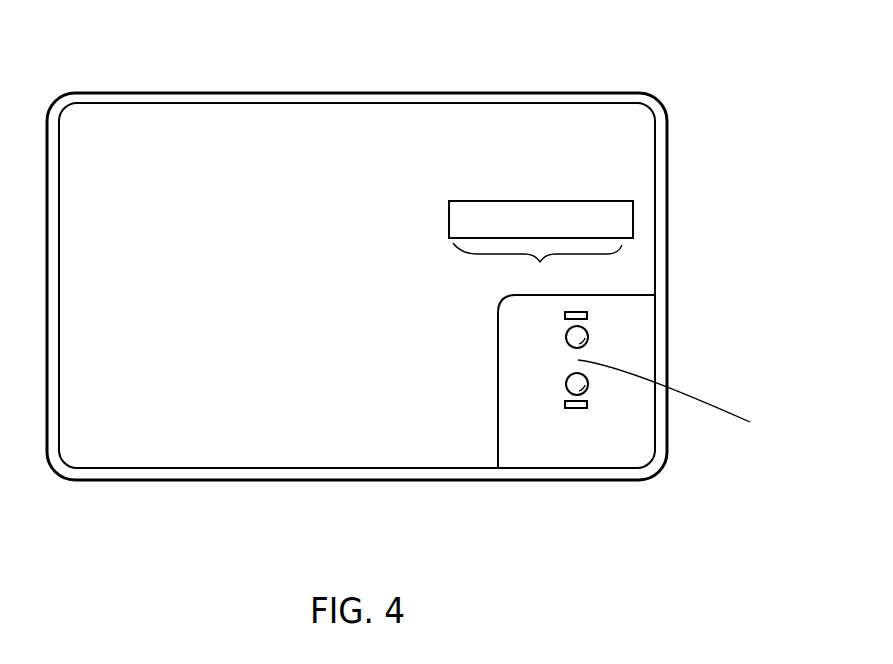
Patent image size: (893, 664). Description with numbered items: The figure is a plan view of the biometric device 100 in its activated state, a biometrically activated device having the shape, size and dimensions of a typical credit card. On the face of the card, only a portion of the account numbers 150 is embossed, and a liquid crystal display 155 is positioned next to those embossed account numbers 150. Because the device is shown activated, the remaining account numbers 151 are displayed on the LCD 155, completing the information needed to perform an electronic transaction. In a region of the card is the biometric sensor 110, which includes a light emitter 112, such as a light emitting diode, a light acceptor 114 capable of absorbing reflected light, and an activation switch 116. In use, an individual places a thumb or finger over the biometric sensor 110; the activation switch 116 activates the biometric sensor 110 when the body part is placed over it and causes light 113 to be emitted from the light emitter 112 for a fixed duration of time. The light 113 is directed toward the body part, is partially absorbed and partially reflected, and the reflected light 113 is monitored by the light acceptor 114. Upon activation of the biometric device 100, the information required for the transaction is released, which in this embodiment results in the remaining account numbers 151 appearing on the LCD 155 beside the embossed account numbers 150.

The biometric device 100 is at (362, 93).
The account numbers 150 is at (393, 204).
The liquid crystal display 155 is at (573, 200).
The remaining account numbers 151 is at (540, 262).
The biometric sensor 110 is at (622, 325).
The light emitter 112 is at (588, 340).
The light 113 is at (686, 397).
The light acceptor 114 is at (588, 390).
The activation switch 116 is at (565, 315).